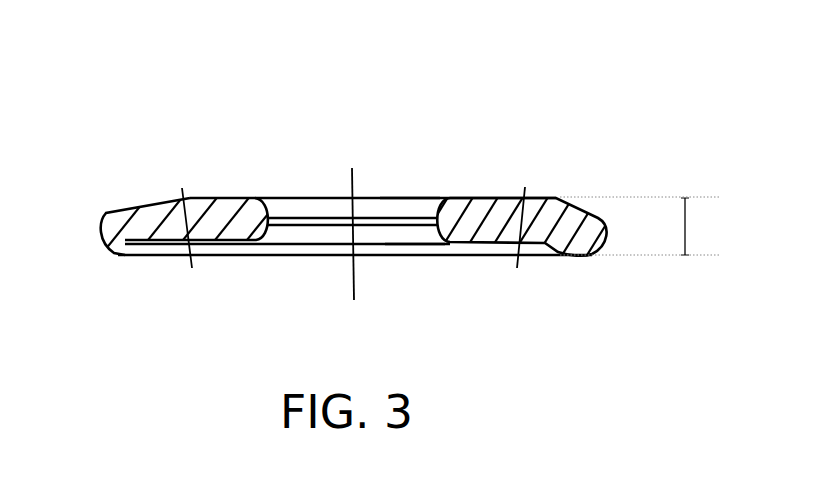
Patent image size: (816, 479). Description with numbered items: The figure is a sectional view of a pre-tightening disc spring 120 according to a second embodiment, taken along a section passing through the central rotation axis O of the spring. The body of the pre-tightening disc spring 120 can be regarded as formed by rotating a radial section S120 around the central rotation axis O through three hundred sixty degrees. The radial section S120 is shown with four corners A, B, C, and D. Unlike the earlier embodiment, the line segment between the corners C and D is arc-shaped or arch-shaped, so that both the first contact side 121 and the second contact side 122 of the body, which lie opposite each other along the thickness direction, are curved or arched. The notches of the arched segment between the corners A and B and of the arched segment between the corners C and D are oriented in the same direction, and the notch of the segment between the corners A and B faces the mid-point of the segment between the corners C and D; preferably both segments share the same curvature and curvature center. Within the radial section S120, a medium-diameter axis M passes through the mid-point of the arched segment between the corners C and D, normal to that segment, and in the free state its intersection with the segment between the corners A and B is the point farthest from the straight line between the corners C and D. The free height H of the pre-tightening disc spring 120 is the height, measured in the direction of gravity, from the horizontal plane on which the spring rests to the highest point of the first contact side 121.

The pre-tightening disc spring 120 is at (428, 45).
The radial section S120 is at (160, 223).
The first contact side 121 is at (410, 198).
The second contact side 122 is at (415, 244).
The corner A is at (104, 214).
The corner B is at (264, 198).
The corner C is at (264, 250).
The corner D is at (113, 253).
The medium-diameter axis M is at (185, 218).
The central rotation axis O is at (438, 226).
The free height H is at (640, 226).